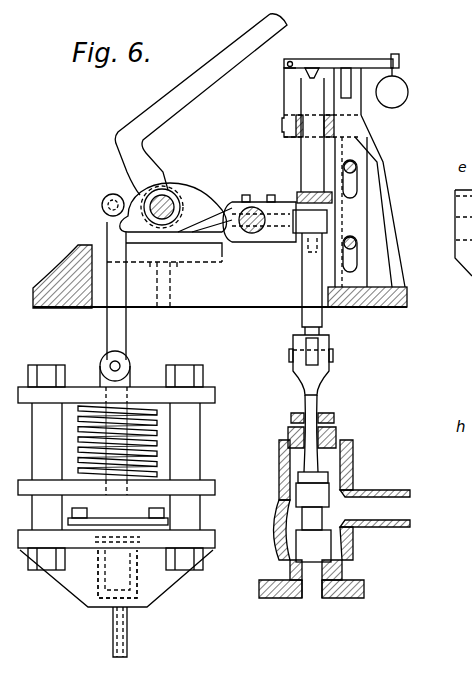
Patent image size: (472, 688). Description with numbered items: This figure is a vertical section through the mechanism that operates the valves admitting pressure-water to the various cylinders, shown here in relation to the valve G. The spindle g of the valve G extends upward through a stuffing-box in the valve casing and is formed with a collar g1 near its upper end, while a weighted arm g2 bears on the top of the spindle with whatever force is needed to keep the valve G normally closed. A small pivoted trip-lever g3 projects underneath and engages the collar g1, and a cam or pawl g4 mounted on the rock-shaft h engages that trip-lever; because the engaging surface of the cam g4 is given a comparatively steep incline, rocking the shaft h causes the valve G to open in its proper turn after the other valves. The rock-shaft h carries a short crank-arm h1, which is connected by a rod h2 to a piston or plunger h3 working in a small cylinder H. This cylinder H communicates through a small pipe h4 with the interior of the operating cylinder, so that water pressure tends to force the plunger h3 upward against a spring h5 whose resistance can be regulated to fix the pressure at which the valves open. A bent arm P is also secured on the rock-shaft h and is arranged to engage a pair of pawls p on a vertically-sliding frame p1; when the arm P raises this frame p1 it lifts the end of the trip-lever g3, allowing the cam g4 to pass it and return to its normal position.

The bent arm P is at (207, 94).
The rock-shaft h is at (166, 200).
The short crank-arm h1 is at (112, 196).
The rod h2 is at (121, 284).
The piston or plunger h3 is at (140, 580).
The small pipe h4 is at (129, 640).
The spring h5 is at (125, 420).
The small cylinder H is at (95, 594).
The valve spindle g is at (302, 282).
The collar g1 is at (300, 193).
The weighted arm g2 is at (318, 66).
The pivoted trip-lever g3 is at (309, 231).
The cam or pawl g4 is at (250, 197).
The pawl p is at (348, 84).
The vertically-sliding frame p1 is at (368, 172).
The valve G is at (333, 524).